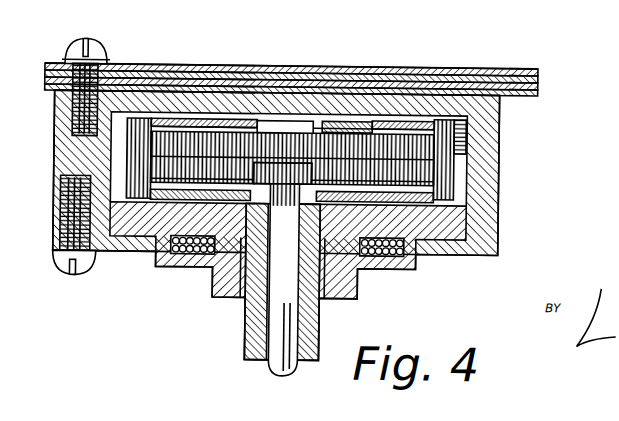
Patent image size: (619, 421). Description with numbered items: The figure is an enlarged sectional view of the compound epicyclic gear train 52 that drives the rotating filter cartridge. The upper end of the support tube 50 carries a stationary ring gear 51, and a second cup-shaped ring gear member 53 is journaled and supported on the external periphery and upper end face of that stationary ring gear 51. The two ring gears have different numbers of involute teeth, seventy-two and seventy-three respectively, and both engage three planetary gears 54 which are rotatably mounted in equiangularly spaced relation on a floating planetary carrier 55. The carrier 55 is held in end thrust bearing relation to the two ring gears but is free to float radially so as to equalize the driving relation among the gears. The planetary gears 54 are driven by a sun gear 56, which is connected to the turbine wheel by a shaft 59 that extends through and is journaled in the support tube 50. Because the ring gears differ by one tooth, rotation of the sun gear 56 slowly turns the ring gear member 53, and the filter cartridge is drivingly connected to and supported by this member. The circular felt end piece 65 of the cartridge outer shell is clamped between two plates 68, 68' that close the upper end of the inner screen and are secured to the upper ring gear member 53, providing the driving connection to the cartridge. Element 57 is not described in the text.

The support tube 50 is at (330, 319).
The stationary ring gear 51 is at (470, 215).
The compound epicyclic gear train 52 is at (215, 285).
The cup-shaped ring gear member 53 is at (495, 121).
The planetary gears 54 is at (247, 141).
The floating planetary carrier 55 is at (371, 117).
The sun gear 56 is at (305, 129).
The coil flange 57 is at (228, 192).
The shaft 59 is at (268, 357).
The circular end piece 65 is at (540, 70).
The plate 68 is at (324, 99).
The plate 68' is at (311, 47).